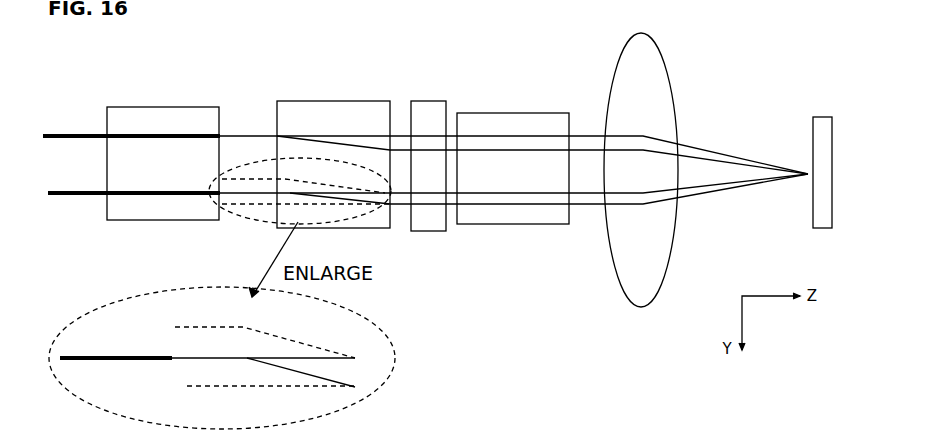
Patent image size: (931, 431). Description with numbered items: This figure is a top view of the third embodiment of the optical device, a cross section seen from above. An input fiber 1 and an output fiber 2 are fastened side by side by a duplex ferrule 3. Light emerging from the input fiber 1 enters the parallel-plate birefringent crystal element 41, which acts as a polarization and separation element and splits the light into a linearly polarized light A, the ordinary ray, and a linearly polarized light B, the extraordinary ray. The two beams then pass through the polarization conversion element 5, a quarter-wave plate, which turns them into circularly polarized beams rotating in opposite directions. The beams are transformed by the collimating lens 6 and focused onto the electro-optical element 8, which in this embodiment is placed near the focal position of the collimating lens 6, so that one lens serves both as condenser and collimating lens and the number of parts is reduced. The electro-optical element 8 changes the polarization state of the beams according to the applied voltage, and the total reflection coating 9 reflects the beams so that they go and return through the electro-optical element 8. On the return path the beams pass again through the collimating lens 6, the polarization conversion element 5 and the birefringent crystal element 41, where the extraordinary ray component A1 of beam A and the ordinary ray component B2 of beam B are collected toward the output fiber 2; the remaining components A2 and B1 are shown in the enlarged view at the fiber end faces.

The input fiber 1 is at (131, 123).
The output fiber 2 is at (134, 182).
The duplex ferrule 3 is at (163, 151).
The parallel-plate birefringent crystal element 41 is at (333, 152).
The polarization conversion element 5 is at (428, 179).
The collimating lens 6 is at (641, 165).
The electro-optical element 8 is at (513, 156).
The total reflection coating 9 is at (822, 189).
The linearly polarized light A is at (514, 171).
The linearly polarized light B is at (514, 164).
The extraordinary ray component in light beam A A1 is at (301, 372).
The beam A component 2 A2 is at (271, 396).
The beam B component 1 B1 is at (265, 337).
The ordinary ray component in light beam B B2 is at (263, 353).